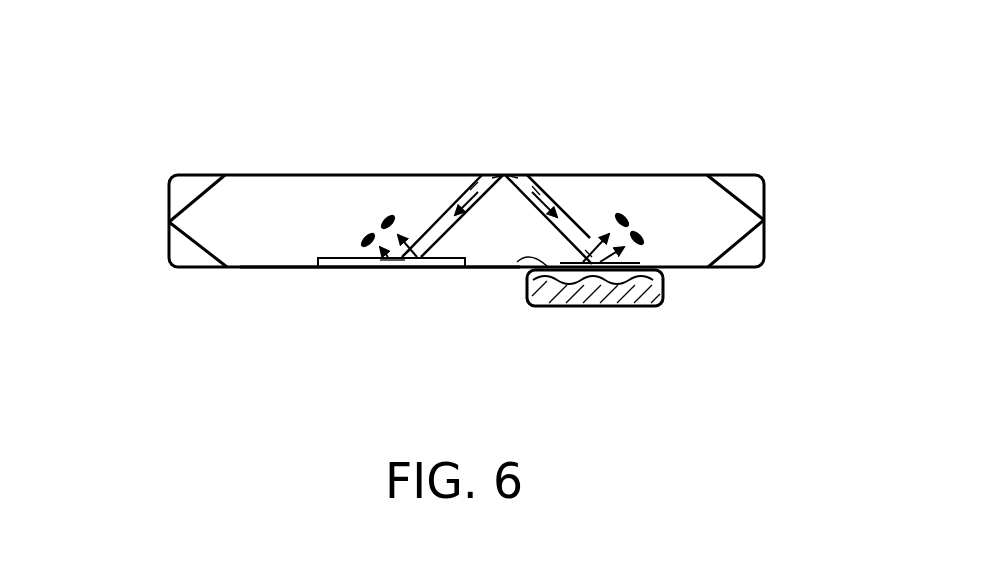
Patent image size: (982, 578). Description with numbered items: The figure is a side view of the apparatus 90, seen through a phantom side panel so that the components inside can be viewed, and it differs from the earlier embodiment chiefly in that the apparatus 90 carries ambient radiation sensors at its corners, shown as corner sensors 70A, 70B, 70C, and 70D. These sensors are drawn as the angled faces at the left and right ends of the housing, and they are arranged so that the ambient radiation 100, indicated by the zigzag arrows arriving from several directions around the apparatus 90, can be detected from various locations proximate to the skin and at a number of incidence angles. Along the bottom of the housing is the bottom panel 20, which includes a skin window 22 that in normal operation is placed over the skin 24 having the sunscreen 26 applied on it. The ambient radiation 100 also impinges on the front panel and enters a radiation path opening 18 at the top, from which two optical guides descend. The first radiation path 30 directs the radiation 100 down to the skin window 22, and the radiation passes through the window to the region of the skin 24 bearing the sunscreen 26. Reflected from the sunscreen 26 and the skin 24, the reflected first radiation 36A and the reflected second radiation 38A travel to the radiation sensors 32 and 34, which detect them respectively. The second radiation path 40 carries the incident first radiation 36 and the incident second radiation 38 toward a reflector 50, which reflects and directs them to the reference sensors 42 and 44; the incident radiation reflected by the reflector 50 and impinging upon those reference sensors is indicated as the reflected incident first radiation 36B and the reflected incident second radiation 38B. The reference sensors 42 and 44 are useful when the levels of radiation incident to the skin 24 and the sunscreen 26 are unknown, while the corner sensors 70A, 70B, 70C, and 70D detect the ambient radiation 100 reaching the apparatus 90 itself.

The apparatus 90 is at (136, 88).
The ambient radiation 100 is at (162, 163).
The radiation path opening 18 is at (514, 173).
The bottom panel 20 is at (245, 268).
The skin window 22 is at (517, 262).
The skin 24 is at (623, 292).
The sunscreen 26 is at (548, 283).
The first radiation path 30 is at (538, 193).
The radiation sensor 32 is at (632, 220).
The radiation sensor 34 is at (648, 240).
The first radiation 36 is at (443, 187).
The second radiation 38 is at (577, 193).
The reflected first radiation 36A is at (597, 240).
The reflected incident first radiation 36B is at (417, 237).
The reflected second radiation 38A is at (655, 263).
The reflected incident second radiation 38B is at (368, 265).
The second radiation path 40 is at (472, 195).
The reference sensor 42 is at (380, 222).
The reference sensor 44 is at (362, 240).
The reflector 50 is at (453, 262).
The corner sensor 70A is at (208, 192).
The corner sensor 70B is at (200, 247).
The corner sensor 70C is at (752, 200).
The corner sensor 70D is at (740, 240).